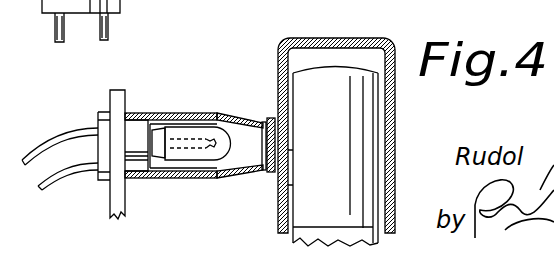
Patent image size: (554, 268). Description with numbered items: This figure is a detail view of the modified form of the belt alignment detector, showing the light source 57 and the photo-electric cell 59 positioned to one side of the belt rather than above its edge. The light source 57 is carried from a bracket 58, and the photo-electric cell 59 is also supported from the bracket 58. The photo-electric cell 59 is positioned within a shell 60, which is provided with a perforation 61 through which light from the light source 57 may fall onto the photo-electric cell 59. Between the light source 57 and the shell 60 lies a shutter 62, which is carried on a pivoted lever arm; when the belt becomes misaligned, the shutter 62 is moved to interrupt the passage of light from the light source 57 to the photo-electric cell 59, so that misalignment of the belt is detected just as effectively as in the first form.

The light source 57 is at (186, 133).
The bracket 58 is at (118, 94).
The photo-electric cell 59 is at (339, 85).
The shell 60 is at (310, 39).
The perforation 61 is at (286, 152).
The shutter 62 is at (270, 117).